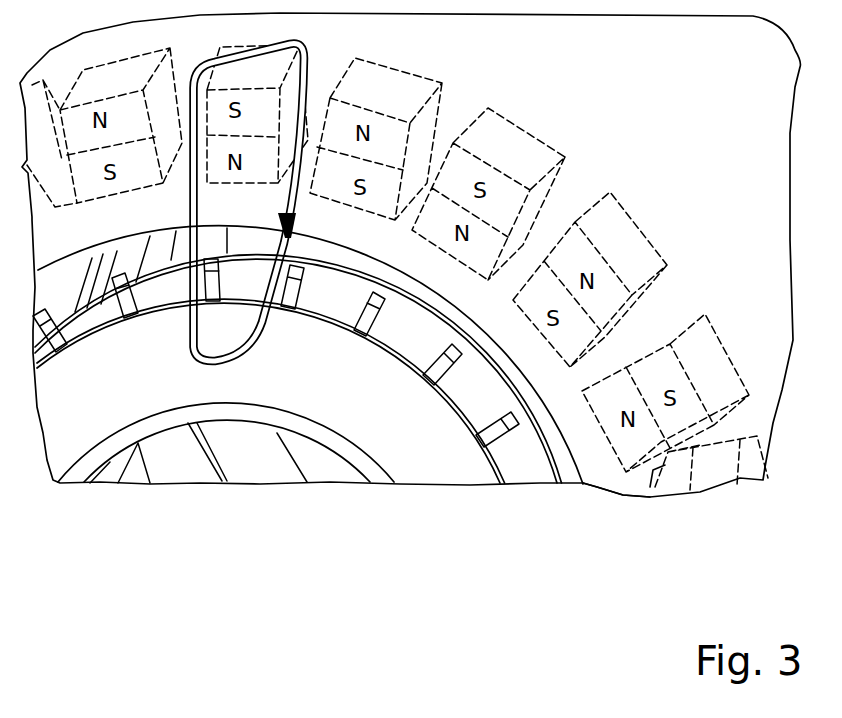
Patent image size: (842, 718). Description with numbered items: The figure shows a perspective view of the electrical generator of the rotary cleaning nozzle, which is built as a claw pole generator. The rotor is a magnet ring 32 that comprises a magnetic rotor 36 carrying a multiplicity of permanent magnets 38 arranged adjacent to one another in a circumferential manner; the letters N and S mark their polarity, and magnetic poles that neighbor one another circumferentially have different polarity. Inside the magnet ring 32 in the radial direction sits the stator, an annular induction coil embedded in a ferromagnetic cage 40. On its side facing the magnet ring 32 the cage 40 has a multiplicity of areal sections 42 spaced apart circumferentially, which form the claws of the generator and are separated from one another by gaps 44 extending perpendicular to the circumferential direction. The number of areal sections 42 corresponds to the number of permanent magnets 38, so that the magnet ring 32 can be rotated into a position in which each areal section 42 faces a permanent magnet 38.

The magnet ring 32 is at (576, 575).
The magnetic rotor 36 is at (593, 460).
The permanent magnets 38 is at (685, 425).
The ferromagnetic cage 40 is at (296, 383).
The areal sections 42 is at (410, 337).
The gaps 44 is at (355, 347).